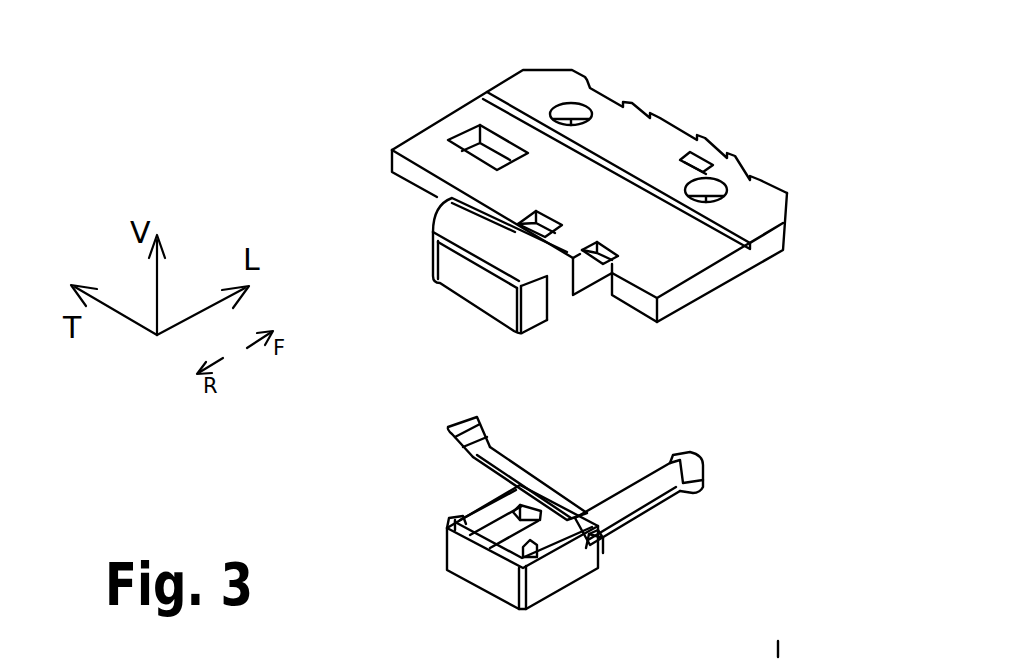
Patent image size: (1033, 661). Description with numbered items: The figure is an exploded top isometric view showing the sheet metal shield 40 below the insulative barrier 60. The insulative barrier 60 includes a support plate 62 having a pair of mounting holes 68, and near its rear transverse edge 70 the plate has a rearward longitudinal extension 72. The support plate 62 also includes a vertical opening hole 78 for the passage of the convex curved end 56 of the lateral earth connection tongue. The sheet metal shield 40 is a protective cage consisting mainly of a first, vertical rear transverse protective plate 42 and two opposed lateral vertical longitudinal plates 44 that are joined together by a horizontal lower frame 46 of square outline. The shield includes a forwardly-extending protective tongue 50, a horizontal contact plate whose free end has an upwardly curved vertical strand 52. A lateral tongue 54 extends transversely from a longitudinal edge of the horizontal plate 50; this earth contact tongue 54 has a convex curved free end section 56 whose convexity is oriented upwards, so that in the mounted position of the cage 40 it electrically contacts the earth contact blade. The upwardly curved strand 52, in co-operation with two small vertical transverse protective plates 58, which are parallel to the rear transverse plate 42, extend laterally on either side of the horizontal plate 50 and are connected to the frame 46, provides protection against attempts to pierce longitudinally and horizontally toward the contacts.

The sheet metal shield 40 is at (720, 462).
The rear transverse protective plate 42 is at (482, 566).
The lateral vertical longitudinal plates 44 is at (485, 537).
The horizontal lower frame 46 is at (541, 545).
The forwardly-extending protective tongue 50 is at (643, 513).
The upwardly curved vertical strand 52 is at (690, 485).
The lateral tongue 54 is at (542, 487).
The convex curved free end section 56 is at (470, 419).
The small vertical transverse protective plates 58 is at (515, 513).
The insulative barrier 60 is at (731, 121).
The support plate 62 is at (770, 240).
The mounting holes 68 is at (568, 116).
The rear transverse edge 70 is at (413, 174).
The rearward longitudinal extension 72 is at (590, 299).
The vertical opening hole 78 is at (468, 143).